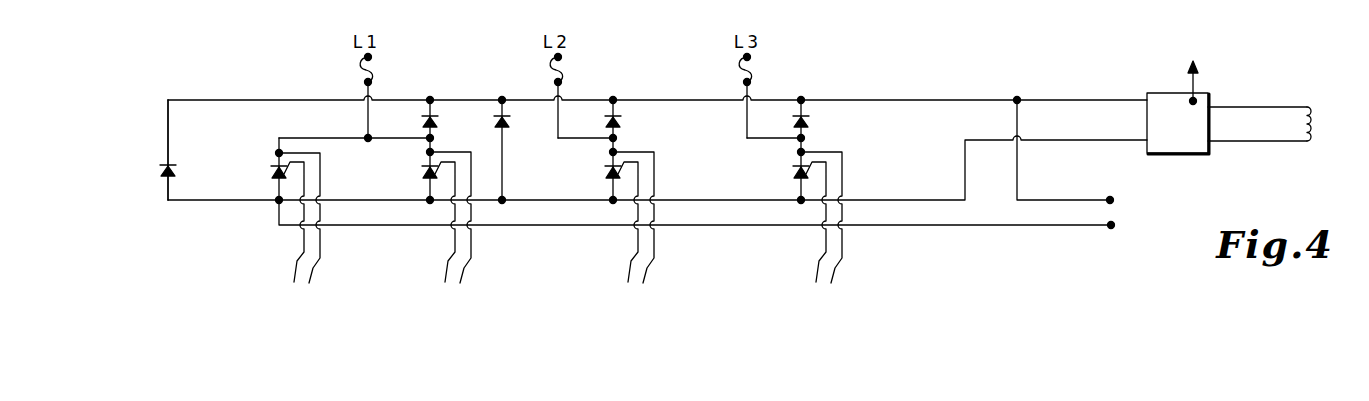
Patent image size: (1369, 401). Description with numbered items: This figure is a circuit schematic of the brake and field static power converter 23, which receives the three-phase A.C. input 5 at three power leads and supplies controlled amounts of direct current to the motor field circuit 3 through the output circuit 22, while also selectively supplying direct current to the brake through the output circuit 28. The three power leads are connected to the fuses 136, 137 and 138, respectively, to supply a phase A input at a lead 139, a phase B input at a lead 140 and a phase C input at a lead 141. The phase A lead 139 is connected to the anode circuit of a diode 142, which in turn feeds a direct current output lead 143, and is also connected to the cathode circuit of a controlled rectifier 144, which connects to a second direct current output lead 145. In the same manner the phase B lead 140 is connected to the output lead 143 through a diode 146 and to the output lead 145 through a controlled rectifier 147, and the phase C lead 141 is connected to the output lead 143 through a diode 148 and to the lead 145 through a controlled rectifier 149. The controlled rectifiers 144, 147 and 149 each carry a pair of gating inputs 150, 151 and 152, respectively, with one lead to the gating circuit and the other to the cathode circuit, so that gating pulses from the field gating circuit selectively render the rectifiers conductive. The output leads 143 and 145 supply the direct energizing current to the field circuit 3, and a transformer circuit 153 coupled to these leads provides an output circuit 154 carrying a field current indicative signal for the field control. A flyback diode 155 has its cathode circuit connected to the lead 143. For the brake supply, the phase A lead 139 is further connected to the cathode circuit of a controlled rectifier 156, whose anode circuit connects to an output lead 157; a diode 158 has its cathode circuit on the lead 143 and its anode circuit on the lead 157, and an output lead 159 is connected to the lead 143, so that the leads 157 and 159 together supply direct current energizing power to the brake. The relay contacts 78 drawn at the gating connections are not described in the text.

The three-phase A.C. input 5 is at (333, 32).
The motor field circuit 3 is at (1312, 125).
The output circuit 22 is at (1306, 93).
The brake and field static power converter 23 is at (217, 262).
The output circuit 28 is at (1095, 199).
The relay contacts 78 is at (299, 230).
The fuse 136 is at (362, 61).
The fuse 137 is at (553, 61).
The fuse 138 is at (743, 61).
The phase A lead 139 is at (403, 143).
The phase B lead 140 is at (597, 141).
The phase C lead 141 is at (765, 142).
The diode 142 is at (423, 120).
The direct current output lead 143 is at (944, 98).
The controlled rectifier 144 is at (421, 176).
The direct current output lead 145 is at (931, 200).
The diode 146 is at (622, 122).
The controlled rectifier 147 is at (607, 176).
The diode 148 is at (812, 121).
The controlled rectifier 149 is at (795, 176).
The gating inputs 150 is at (447, 230).
The gating inputs 151 is at (633, 268).
The gating inputs 152 is at (821, 263).
The transformer circuit 153 is at (1197, 160).
The output circuit 154 is at (1190, 80).
The flyback diode 155 is at (508, 120).
The controlled rectifier 156 is at (271, 172).
The output lead 157 is at (991, 227).
The diode 158 is at (159, 172).
The output lead 159 is at (1056, 200).